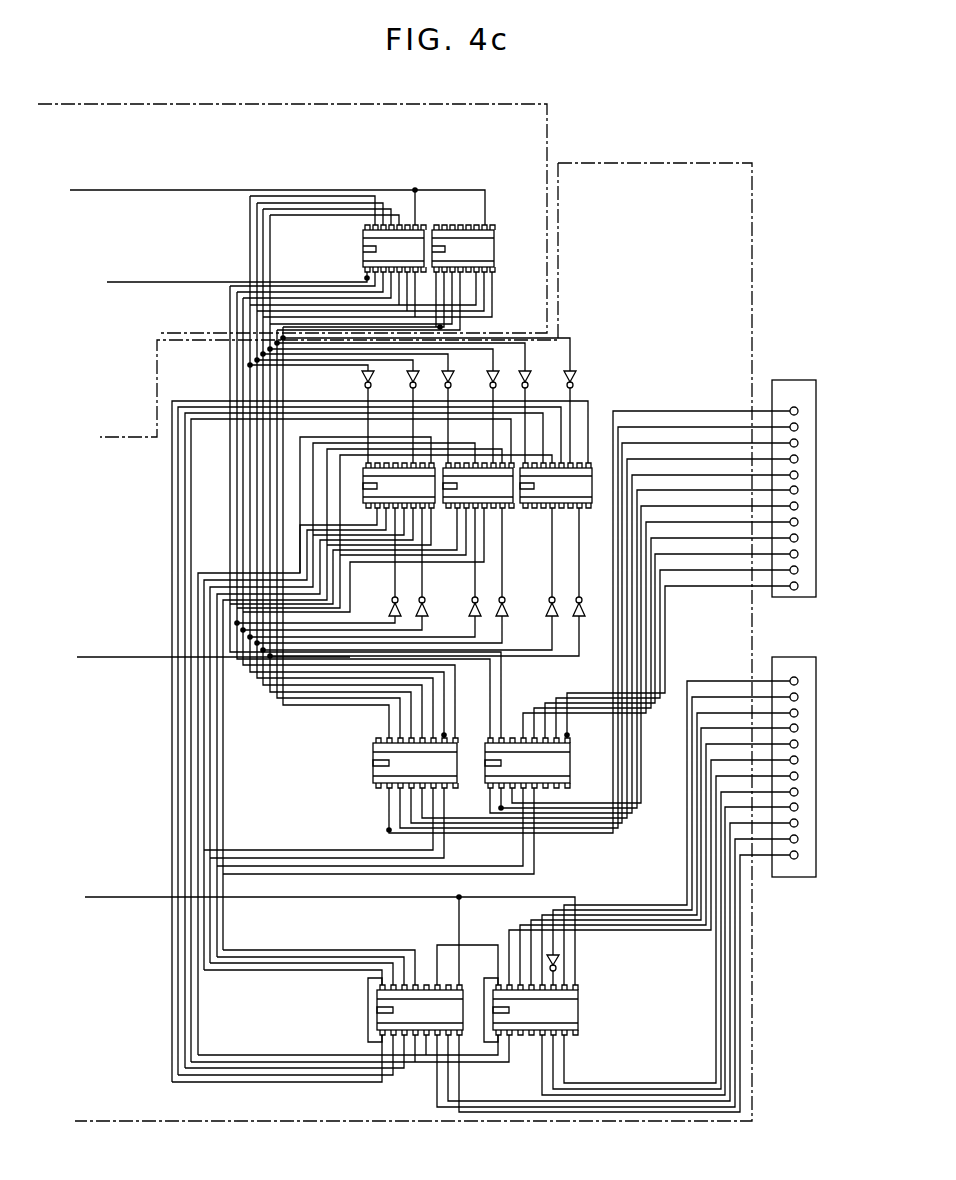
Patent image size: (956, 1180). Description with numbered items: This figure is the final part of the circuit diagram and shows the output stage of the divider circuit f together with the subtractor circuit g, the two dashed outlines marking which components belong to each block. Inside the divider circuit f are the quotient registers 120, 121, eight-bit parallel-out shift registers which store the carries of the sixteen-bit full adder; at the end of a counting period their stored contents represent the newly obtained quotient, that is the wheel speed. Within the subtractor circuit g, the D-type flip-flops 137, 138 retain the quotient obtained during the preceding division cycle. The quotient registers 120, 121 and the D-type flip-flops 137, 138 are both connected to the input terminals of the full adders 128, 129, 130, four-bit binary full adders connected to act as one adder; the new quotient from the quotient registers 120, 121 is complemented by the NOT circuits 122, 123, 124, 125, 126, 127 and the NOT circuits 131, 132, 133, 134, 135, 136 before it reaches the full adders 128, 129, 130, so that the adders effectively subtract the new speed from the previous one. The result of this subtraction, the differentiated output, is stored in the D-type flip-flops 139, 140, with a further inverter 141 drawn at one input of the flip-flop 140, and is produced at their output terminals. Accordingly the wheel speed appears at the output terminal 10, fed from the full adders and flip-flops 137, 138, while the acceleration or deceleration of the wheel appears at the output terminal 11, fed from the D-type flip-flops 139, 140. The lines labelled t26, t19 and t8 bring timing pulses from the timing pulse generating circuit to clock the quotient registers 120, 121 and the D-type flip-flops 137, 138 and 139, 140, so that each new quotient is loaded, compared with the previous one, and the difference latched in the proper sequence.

The output terminal 10 is at (786, 380).
The output terminal 11 is at (786, 657).
The quotient register 120 is at (362, 242).
The quotient register 121 is at (494, 246).
The NOT circuit 122 is at (361, 381).
The NOT circuit 123 is at (410, 385).
The NOT circuit 124 is at (445, 385).
The NOT circuit 125 is at (490, 385).
The NOT circuit 126 is at (523, 385).
The NOT circuit 127 is at (567, 385).
The full adder 128 is at (363, 491).
The full adder 129 is at (513, 505).
The full adder 130 is at (592, 475).
The NOT circuit 131 is at (389, 610).
The NOT circuit 132 is at (426, 615).
The NOT circuit 133 is at (471, 619).
The NOT circuit 134 is at (506, 615).
The NOT circuit 135 is at (549, 619).
The NOT circuit 136 is at (579, 616).
The D-type flip-flop 137 is at (373, 769).
The D-type flip-flop 138 is at (565, 766).
The D-type flip-flop 139 is at (377, 1004).
The D-type flip-flop 140 is at (568, 1017).
The inverter 141 is at (559, 960).
The timing signal t26 is at (121, 194).
The timing signal t19 is at (85, 660).
The timing signal line t8 is at (299, 900).
The divider circuit f is at (371, 108).
The subtractor circuit g is at (678, 163).